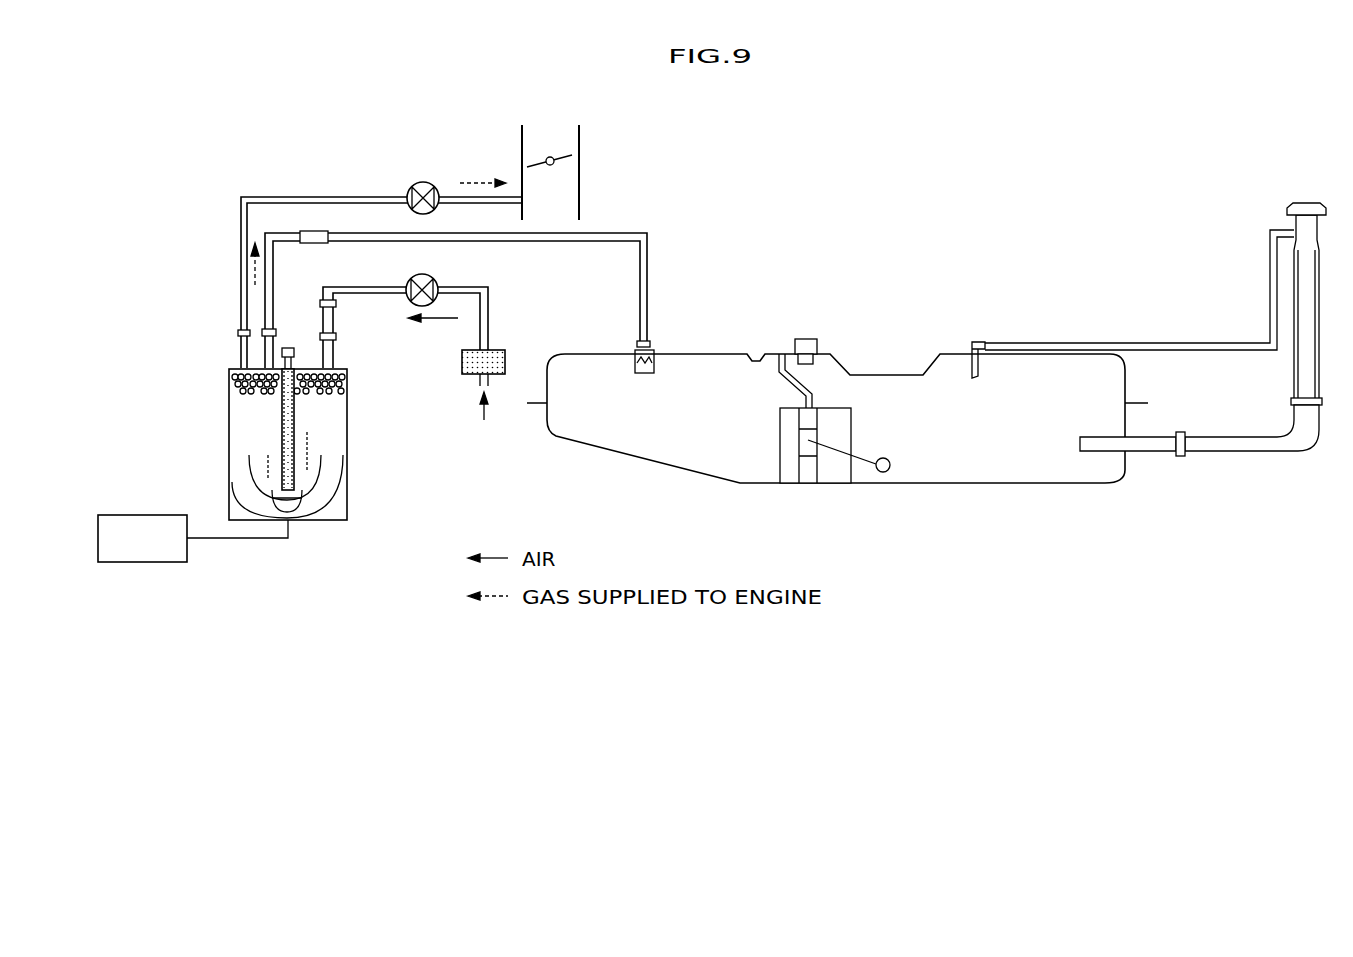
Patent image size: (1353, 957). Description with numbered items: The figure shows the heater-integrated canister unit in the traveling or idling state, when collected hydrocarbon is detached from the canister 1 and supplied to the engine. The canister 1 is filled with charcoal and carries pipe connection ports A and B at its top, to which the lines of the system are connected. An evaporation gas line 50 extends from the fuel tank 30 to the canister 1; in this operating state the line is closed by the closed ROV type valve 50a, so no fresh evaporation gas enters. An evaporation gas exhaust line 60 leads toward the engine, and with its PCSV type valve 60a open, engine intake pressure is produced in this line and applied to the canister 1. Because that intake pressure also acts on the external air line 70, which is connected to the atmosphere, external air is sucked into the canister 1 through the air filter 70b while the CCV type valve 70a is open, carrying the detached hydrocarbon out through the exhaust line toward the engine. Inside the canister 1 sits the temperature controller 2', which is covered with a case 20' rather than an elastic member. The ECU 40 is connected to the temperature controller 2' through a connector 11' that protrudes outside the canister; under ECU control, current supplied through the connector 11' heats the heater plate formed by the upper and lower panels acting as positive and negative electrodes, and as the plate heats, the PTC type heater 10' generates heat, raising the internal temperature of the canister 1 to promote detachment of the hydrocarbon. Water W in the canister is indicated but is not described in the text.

The canister 1 is at (222, 433).
The temperature controller 2' is at (361, 419).
The PTC type of heater 10' is at (341, 429).
The connector 11' is at (340, 376).
The case 20' is at (340, 429).
The fuel tank 30 is at (884, 375).
The ECU 40 is at (140, 515).
The evaporation gas line 50 is at (649, 243).
The valve 50a is at (653, 350).
The evaporation gas exhaust line 60 is at (240, 229).
The valve 60a is at (423, 181).
The external air line 70 is at (490, 305).
The valve 70a is at (430, 277).
The air filter 70b is at (508, 366).
The pipe connection port A is at (353, 335).
The pipe connection port B is at (238, 335).
The water W is at (229, 380).